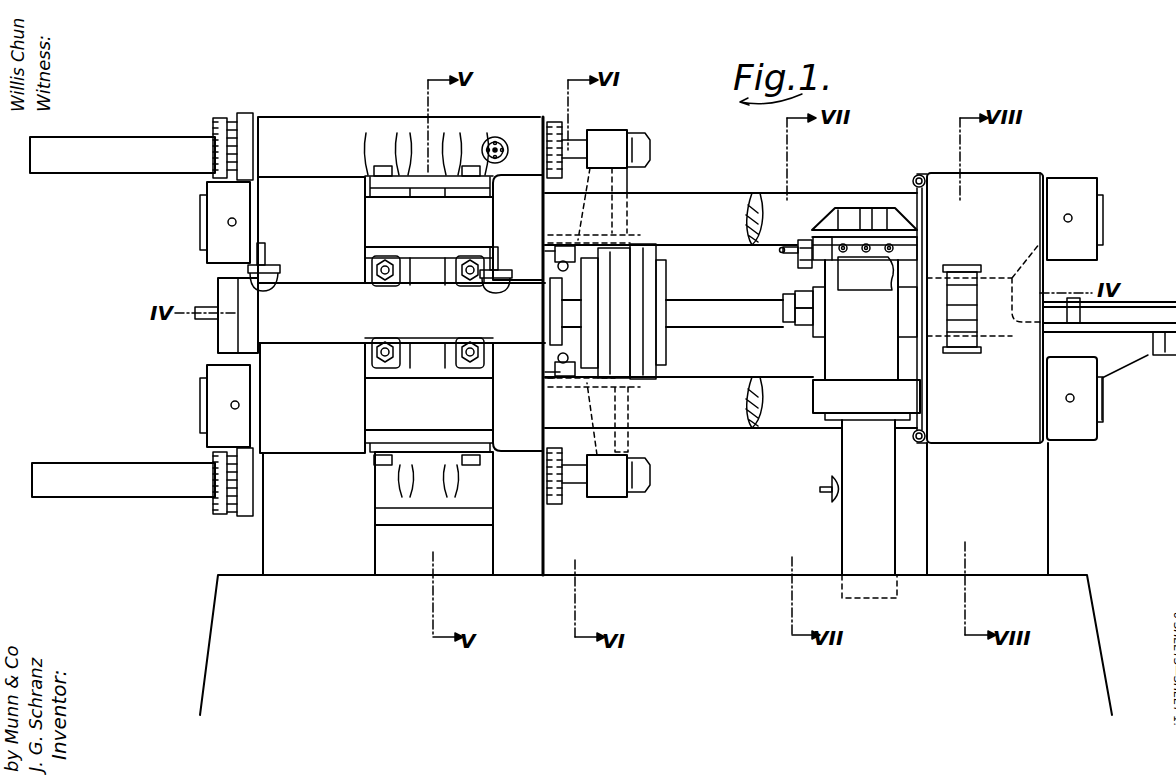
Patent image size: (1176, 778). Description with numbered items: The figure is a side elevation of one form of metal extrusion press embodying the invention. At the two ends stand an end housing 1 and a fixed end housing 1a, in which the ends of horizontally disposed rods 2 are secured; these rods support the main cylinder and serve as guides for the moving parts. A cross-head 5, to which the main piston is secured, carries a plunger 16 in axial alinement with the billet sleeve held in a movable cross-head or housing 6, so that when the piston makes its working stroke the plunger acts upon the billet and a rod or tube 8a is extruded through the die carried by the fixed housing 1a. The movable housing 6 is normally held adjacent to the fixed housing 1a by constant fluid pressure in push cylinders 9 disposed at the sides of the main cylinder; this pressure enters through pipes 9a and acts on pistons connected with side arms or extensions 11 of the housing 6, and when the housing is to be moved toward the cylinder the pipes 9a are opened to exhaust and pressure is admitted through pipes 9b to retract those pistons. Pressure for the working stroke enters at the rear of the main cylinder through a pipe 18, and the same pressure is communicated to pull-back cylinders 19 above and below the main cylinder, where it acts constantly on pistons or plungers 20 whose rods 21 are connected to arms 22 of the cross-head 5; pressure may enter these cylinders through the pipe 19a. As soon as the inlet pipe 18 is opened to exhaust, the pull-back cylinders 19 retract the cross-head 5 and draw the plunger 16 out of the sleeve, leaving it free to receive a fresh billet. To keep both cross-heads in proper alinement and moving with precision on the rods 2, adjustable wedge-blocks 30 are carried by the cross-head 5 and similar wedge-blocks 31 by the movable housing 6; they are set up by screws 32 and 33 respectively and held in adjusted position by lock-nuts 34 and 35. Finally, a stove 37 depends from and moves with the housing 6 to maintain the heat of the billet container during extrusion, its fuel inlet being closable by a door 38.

The end housing 1 is at (311, 315).
The fixed end housing 1a is at (1044, 308).
The rods 2 is at (429, 314).
The cross-head 5 is at (612, 343).
The movable cross-head or housing 6 is at (798, 321).
The extruded rod or tube 8a is at (962, 314).
The push cylinders 9 is at (410, 313).
The pipes 9a is at (269, 265).
The pipes 9b is at (501, 268).
The side arms or extensions 11 is at (866, 314).
The plunger 16 is at (730, 328).
The pipe 18 is at (208, 307).
The pull-back cylinders 19 is at (399, 321).
The pipe 19a is at (505, 153).
The pistons or plungers 20 is at (122, 317).
The rods 21 is at (583, 487).
The arms 22 is at (613, 505).
The adjustable wedge-blocks 30 is at (598, 240).
The adjustable wedge-blocks 31 is at (818, 250).
The screws 32 is at (563, 246).
The screws 33 is at (548, 245).
The lock-nuts 34 is at (803, 268).
The lock-nuts 35 is at (782, 251).
The stove 37 is at (869, 509).
The door 38 is at (831, 486).